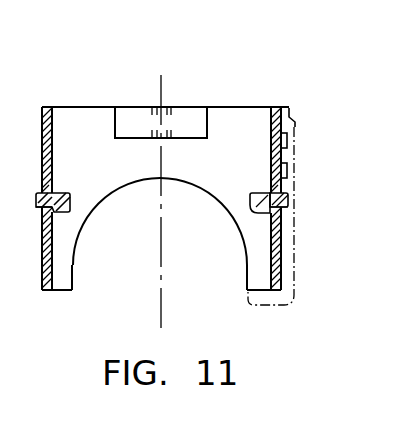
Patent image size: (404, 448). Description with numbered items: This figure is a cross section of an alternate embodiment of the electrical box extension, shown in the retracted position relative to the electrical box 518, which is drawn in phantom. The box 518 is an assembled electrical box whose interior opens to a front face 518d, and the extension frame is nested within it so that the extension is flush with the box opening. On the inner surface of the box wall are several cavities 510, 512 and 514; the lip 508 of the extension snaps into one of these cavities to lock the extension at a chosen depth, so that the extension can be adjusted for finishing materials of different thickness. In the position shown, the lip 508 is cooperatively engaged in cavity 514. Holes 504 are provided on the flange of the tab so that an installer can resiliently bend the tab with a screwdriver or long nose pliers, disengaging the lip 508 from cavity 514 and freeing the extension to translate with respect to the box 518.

The holes 504 is at (262, 193).
The lip 508 is at (285, 208).
The cavity 510 is at (296, 123).
The cavity 512 is at (287, 168).
The cavity 514 is at (288, 205).
The electrical box 518 is at (292, 292).
The front face 518d is at (282, 108).